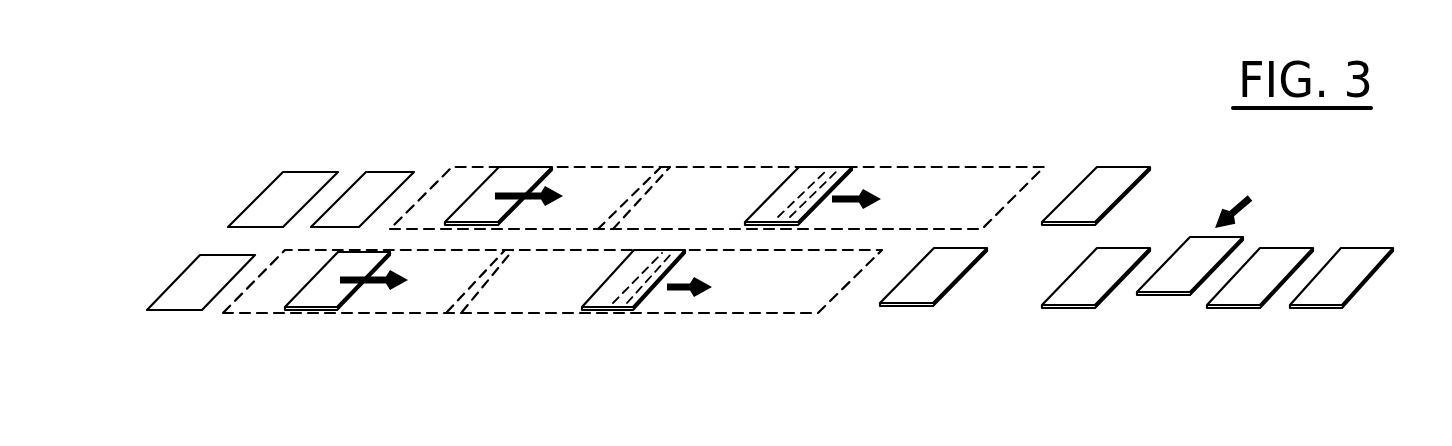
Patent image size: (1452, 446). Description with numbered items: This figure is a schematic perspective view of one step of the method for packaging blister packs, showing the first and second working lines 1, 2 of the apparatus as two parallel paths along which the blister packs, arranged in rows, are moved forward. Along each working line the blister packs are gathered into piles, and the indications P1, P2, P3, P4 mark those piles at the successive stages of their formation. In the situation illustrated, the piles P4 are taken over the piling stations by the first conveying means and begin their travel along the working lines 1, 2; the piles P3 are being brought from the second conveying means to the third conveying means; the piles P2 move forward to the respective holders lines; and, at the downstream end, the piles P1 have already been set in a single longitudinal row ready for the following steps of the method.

The first working line 1 is at (170, 268).
The second working line 2 is at (247, 172).
The piles of blister packs P1 is at (1083, 290).
The piles of blister packs P2 is at (1100, 185).
The piles of blister packs P3 is at (805, 175).
The piles of blister packs P4 is at (512, 173).